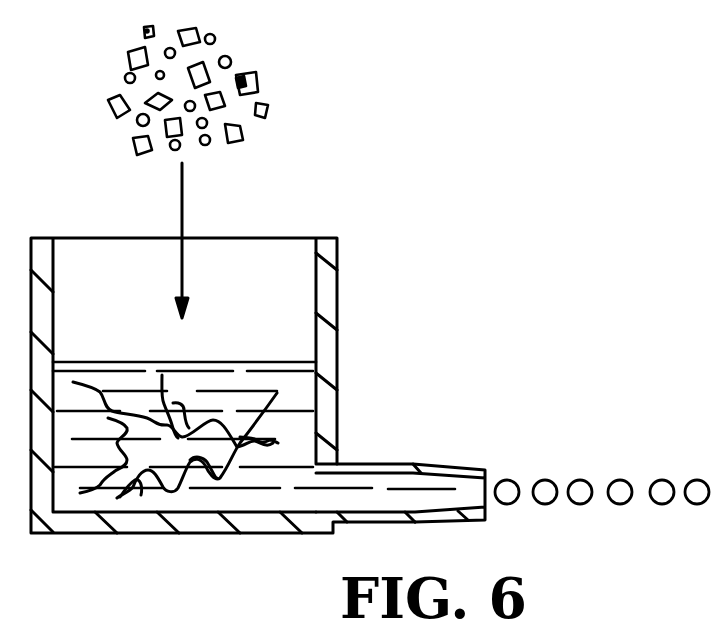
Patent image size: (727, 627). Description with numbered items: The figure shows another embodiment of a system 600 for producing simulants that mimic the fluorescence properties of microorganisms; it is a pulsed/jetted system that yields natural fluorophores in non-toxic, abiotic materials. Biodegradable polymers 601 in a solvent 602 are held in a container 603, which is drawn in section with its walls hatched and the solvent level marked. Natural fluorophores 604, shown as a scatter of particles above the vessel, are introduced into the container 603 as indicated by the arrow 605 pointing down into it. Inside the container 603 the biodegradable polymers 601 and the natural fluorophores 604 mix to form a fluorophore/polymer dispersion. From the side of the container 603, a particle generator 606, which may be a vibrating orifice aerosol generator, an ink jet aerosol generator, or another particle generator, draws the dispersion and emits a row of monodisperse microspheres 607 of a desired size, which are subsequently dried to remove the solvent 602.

The system 600 is at (462, 150).
The biodegradable polymers 601 is at (128, 490).
The solvent 602 is at (230, 360).
The container 603 is at (338, 298).
The natural fluorophores 604 is at (134, 145).
The arrow 605 is at (184, 208).
The particle generator 606 is at (400, 465).
The monodisperse microspheres 607 is at (514, 481).